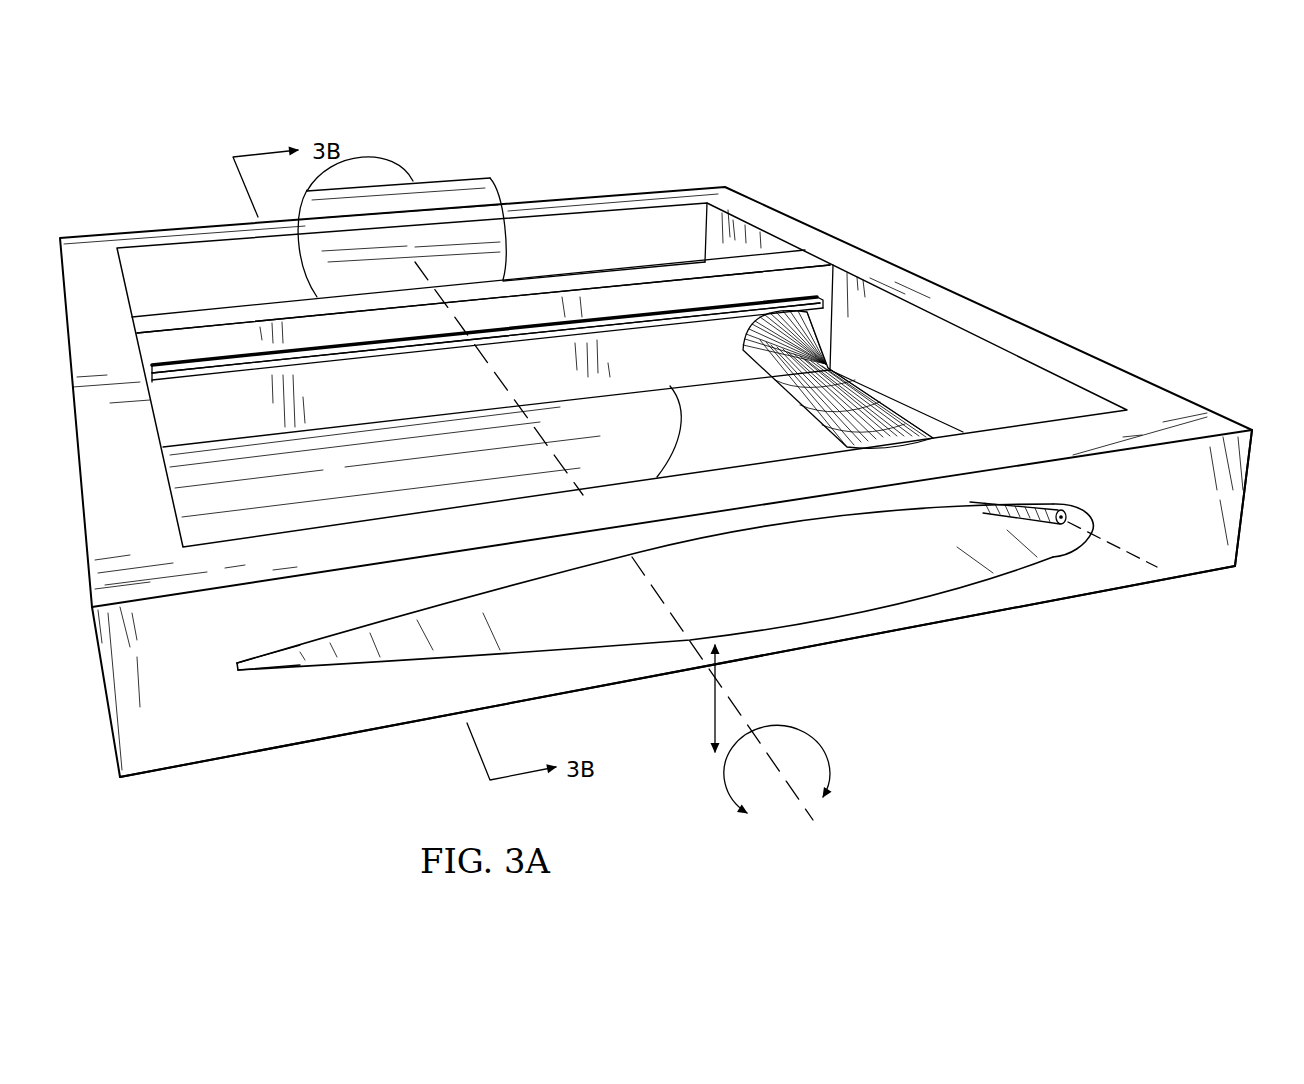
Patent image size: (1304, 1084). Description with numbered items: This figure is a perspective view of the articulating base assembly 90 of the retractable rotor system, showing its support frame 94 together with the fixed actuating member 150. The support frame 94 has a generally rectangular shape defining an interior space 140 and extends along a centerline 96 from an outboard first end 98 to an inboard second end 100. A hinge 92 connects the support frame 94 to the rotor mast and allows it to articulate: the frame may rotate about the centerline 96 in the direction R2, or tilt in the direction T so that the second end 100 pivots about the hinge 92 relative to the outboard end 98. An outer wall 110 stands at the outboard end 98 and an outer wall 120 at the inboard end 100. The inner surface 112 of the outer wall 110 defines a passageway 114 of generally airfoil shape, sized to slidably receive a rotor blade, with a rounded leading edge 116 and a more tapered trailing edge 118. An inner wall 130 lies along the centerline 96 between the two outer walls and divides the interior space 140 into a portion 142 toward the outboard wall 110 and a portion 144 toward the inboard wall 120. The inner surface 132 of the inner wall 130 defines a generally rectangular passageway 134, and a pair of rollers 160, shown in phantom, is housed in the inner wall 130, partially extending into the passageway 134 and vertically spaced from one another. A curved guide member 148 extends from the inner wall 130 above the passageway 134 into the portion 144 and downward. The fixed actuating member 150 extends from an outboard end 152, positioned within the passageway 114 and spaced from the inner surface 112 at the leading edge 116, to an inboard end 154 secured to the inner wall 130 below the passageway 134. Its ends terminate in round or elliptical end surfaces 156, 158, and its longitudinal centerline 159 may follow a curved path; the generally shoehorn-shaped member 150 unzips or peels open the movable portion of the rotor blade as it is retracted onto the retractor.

The articulating base assembly 90 is at (1112, 345).
The hinge 92 is at (410, 179).
The support frame 94 is at (960, 316).
The centerline 96 is at (748, 720).
The outboard first end 98 is at (1226, 580).
The inboard second end 100 is at (697, 186).
The outer wall 110 is at (1178, 566).
The inner surface 112 is at (865, 590).
The passageway 114 is at (955, 566).
The rounded leading edge 116 is at (1100, 528).
The tapered trailing edge 118 is at (250, 675).
The outer wall 120 is at (192, 253).
The inner wall 130 is at (632, 278).
The inner surface 132 is at (257, 360).
The passageway 134 is at (682, 312).
The interior space 140 is at (744, 241).
The portion 142 is at (335, 492).
The portion 144 is at (537, 262).
The curved guide member 148 is at (650, 438).
The fixed actuating member 150 is at (928, 410).
The outboard end 152 is at (1068, 506).
The inboard end 154 is at (829, 344).
The end surface 156 is at (1058, 524).
The end surface 158 is at (743, 345).
The longitudinal centerline 159 is at (1130, 560).
The rollers 160 is at (373, 349).
The tilt direction T is at (713, 721).
The rotation direction R2 is at (843, 757).